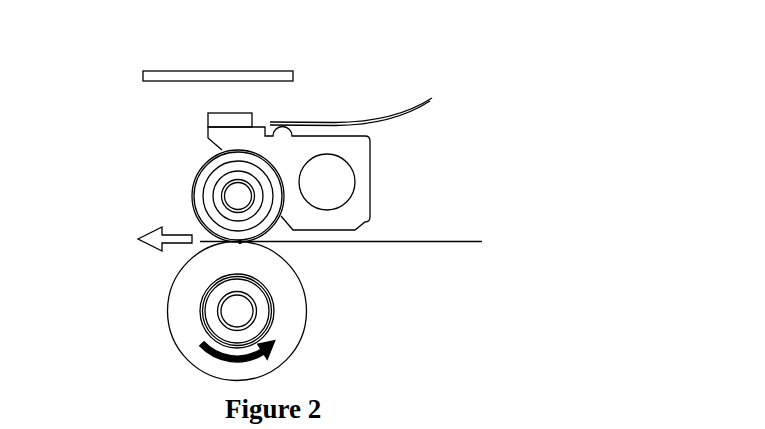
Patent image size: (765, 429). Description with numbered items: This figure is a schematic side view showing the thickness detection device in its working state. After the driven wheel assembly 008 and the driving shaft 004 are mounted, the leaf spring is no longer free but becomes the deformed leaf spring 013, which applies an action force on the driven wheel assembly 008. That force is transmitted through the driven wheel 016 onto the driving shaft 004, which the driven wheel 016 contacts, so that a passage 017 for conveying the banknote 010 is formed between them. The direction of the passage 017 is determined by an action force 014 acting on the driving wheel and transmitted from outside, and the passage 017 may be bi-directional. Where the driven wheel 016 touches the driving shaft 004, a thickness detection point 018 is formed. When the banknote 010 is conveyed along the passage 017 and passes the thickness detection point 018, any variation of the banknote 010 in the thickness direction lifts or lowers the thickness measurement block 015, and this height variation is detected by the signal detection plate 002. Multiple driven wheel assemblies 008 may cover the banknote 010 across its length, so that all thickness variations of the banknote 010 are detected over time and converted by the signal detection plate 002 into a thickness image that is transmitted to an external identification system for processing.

The signal detection plate 002 is at (232, 70).
The thickness measurement block 015 is at (232, 112).
The driven wheel assembly 008 is at (355, 155).
The deformed leaf spring 013 is at (297, 121).
The driven wheel 016 is at (197, 180).
The passage 017 is at (180, 233).
The banknote 010 is at (347, 243).
The thickness detection point 018 is at (240, 242).
The driving shaft 004 is at (180, 298).
The action force 014 is at (217, 362).